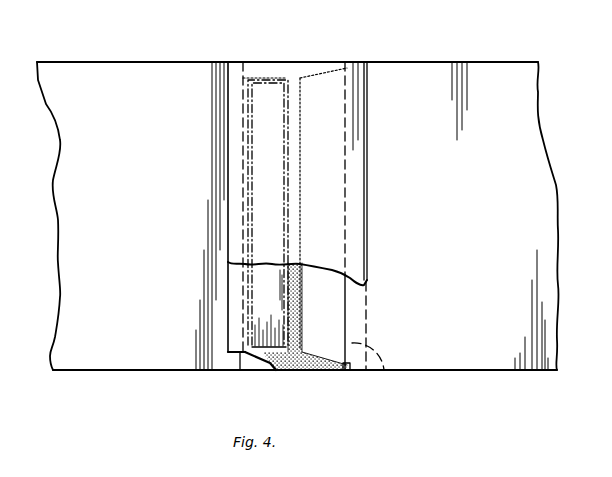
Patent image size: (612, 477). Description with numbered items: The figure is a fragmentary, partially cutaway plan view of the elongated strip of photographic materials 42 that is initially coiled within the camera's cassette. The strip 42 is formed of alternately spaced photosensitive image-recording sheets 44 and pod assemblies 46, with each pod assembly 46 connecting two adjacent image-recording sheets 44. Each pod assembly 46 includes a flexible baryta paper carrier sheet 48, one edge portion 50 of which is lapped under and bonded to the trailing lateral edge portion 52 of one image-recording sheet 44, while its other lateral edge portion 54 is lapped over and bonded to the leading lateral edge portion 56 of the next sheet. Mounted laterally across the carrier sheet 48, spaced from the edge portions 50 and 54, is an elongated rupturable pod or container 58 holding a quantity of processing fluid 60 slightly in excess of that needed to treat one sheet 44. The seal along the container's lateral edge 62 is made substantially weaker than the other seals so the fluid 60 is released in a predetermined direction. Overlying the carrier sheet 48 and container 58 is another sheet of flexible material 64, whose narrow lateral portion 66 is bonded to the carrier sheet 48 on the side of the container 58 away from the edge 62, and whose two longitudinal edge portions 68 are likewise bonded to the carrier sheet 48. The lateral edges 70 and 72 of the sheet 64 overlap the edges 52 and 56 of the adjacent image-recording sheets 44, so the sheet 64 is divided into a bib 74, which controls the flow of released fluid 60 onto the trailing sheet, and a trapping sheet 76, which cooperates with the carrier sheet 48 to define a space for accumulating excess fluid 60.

The elongated strip of photographic materials 42 is at (427, 62).
The photosensitive image-recording sheet 44 is at (148, 363).
The pod assembly 46 is at (297, 60).
The carrier sheet 48 is at (334, 369).
The edge portion of carrier sheet 50 is at (383, 372).
The trailing lateral edge portion 52 is at (355, 298).
The other lateral edge portion of carrier sheet 54 is at (235, 310).
The leading lateral edge portion 56 is at (238, 368).
The rupturable pod or container 58 is at (264, 334).
The processing fluid 60 is at (268, 318).
The lateral edge of container 62 is at (247, 282).
The sheet of flexible material 64 is at (366, 282).
The narrow lateral portion 66 is at (295, 140).
The longitudinal edge portions 68 is at (262, 72).
The lateral edge of flexible sheet 70 is at (367, 147).
The lateral edge of flexible sheet 72 is at (227, 112).
The bib 74 is at (262, 133).
The trapping sheet 76 is at (340, 196).